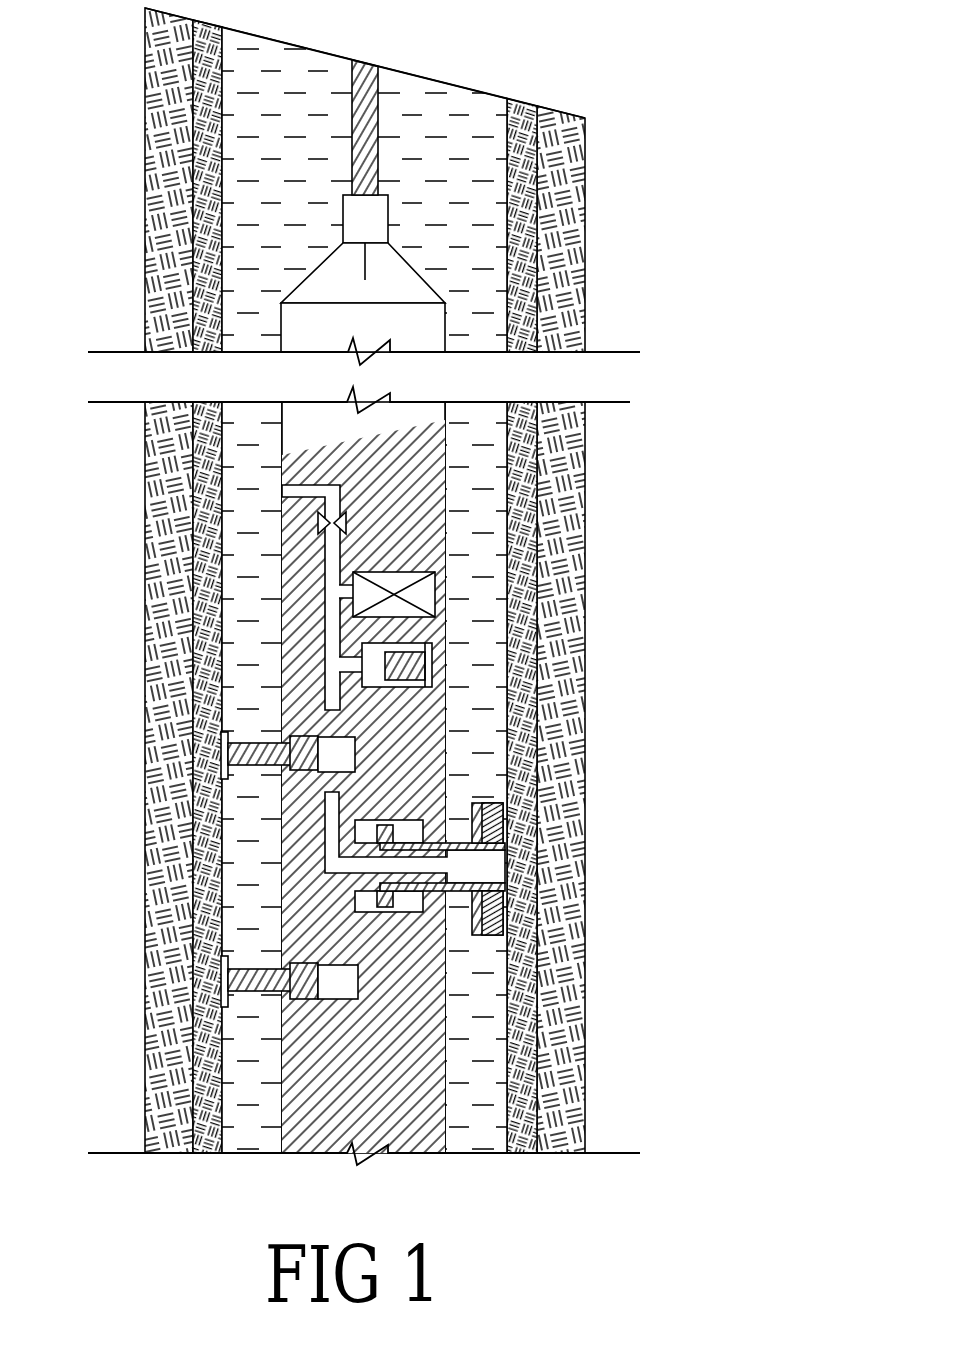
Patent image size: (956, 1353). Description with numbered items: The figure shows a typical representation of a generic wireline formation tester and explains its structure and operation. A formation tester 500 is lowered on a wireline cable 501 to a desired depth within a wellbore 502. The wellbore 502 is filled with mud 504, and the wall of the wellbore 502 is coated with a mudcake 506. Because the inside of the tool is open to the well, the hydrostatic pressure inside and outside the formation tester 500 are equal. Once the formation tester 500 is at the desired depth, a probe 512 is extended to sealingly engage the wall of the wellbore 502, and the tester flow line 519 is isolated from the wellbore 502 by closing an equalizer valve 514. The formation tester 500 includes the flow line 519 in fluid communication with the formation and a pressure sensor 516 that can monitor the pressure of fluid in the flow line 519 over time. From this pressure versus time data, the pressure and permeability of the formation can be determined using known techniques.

The formation tester 500 is at (280, 1093).
The wireline cable 501 is at (383, 150).
The wellbore 502 is at (465, 197).
The mud 504 is at (230, 1043).
The mudcake 506 is at (540, 183).
The probe 512 is at (483, 885).
The equalizer valve 514 is at (320, 523).
The pressure sensor 516 is at (430, 597).
The flow line 519 is at (328, 838).